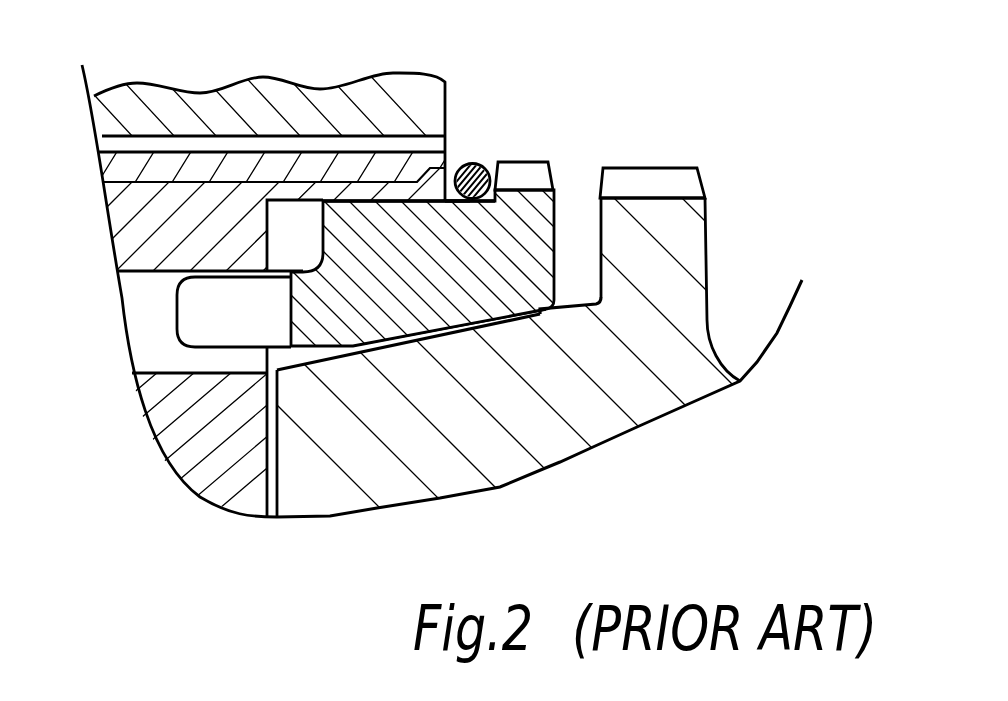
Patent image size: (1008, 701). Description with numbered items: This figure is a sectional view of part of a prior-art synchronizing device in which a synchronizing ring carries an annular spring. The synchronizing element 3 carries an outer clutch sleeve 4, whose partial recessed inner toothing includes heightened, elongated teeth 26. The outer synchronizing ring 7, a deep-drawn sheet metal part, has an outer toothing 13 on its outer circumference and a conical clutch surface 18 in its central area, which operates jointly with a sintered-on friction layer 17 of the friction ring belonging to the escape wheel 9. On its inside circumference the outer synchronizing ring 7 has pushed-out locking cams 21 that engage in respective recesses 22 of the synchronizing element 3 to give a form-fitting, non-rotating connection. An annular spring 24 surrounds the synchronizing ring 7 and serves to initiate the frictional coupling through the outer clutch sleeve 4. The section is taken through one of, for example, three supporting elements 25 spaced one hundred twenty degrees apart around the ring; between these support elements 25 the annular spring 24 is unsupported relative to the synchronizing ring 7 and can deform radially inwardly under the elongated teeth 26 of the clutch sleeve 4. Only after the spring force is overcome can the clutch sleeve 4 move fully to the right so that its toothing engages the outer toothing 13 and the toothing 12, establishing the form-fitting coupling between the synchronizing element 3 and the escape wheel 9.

The synchronizing element 3 is at (137, 238).
The outer clutch sleeve 4 is at (458, 102).
The outer synchronizing ring 7 is at (537, 217).
The escape wheel 9 is at (693, 397).
The toothing 12 is at (642, 178).
The outer toothing 13 is at (522, 178).
The friction layer 17 is at (420, 337).
The clutch surface 18 is at (515, 306).
The locking cam 21 is at (205, 305).
The recess 22 is at (142, 348).
The annular spring 24 is at (477, 163).
The supporting element 25 is at (456, 203).
The elongated tooth 26 is at (348, 178).